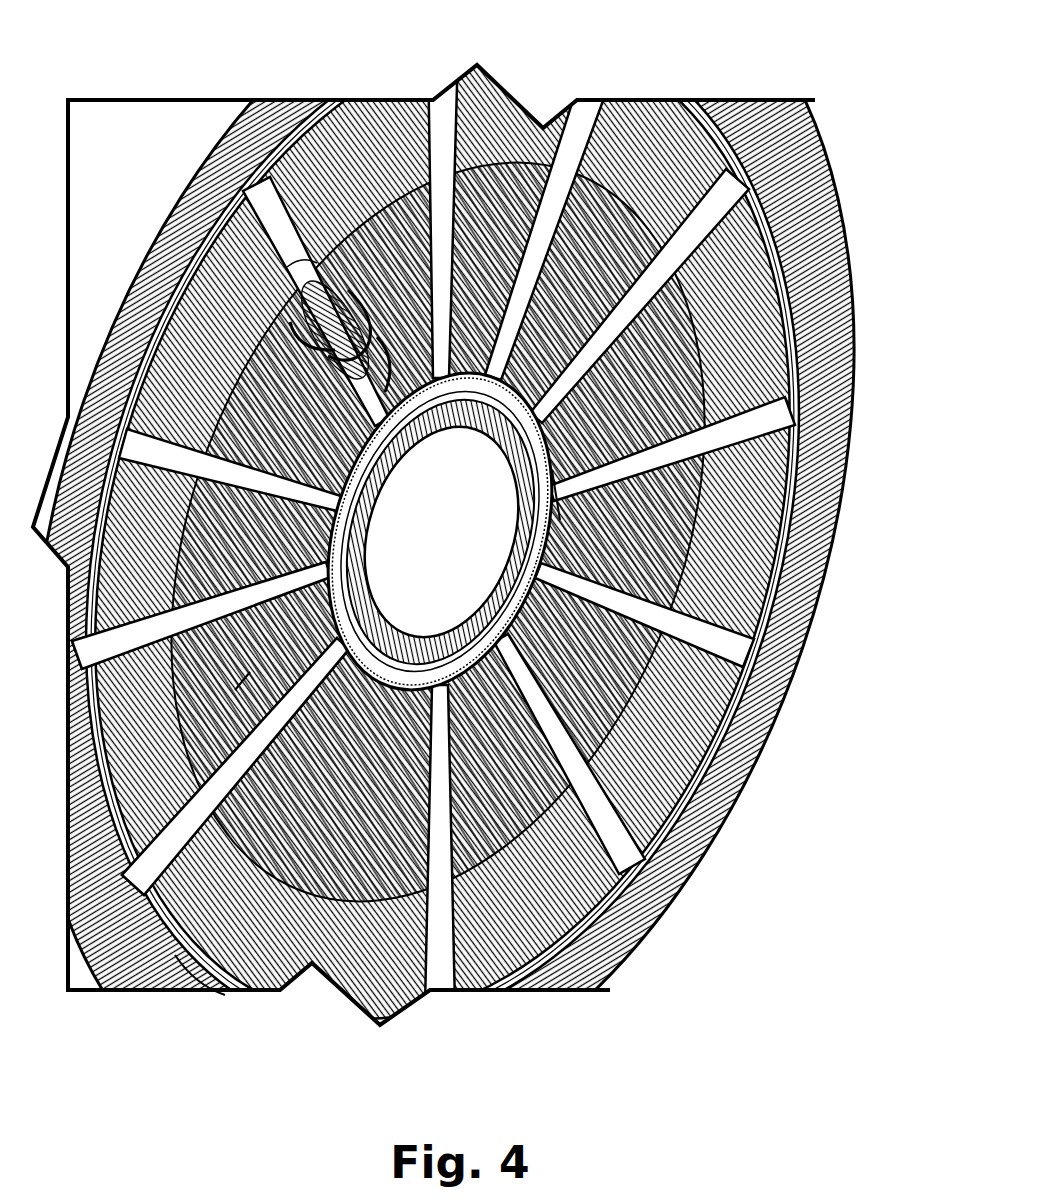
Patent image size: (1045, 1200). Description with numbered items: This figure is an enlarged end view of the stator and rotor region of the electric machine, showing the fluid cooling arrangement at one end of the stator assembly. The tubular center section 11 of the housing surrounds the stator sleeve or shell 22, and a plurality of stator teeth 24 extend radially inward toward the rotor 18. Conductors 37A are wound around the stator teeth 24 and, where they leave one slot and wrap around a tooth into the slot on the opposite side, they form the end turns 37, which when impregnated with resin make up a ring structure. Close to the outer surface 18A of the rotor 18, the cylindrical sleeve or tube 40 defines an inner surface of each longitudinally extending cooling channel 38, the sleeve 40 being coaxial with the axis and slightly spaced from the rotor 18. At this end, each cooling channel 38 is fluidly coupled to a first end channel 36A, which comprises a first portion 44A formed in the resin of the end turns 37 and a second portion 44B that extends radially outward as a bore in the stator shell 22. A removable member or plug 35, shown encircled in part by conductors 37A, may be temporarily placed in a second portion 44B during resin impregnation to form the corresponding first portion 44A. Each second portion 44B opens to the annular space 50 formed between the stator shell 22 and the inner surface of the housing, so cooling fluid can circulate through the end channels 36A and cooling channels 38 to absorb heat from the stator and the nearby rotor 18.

The tubular center section 11 is at (852, 537).
The rotor 18 is at (378, 890).
The outer surface of the rotor 18A is at (458, 387).
The stator sleeve or shell 22 is at (494, 939).
The stator teeth 24 is at (560, 527).
The removable member or plug 35 is at (320, 300).
The first end channels 36A is at (95, 690).
The end turns 37 is at (240, 677).
The conductors 37A is at (447, 345).
The cooling channels 38 is at (525, 395).
The cylindrical sleeve or tube 40 is at (455, 385).
The first portion 44A is at (273, 477).
The second portion 44B is at (185, 430).
The annular space 50 is at (190, 973).